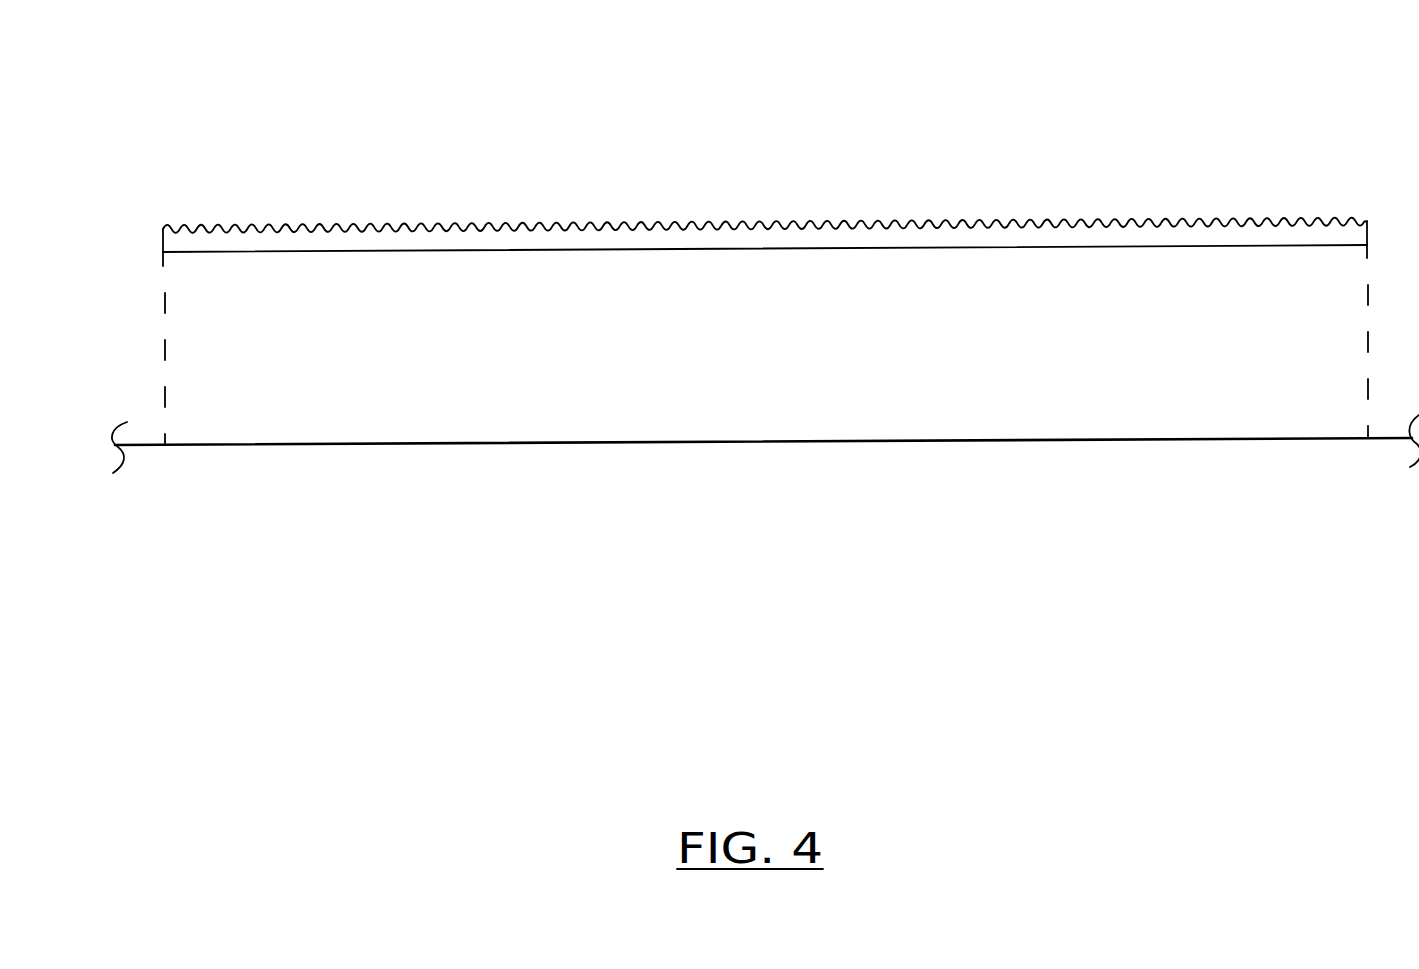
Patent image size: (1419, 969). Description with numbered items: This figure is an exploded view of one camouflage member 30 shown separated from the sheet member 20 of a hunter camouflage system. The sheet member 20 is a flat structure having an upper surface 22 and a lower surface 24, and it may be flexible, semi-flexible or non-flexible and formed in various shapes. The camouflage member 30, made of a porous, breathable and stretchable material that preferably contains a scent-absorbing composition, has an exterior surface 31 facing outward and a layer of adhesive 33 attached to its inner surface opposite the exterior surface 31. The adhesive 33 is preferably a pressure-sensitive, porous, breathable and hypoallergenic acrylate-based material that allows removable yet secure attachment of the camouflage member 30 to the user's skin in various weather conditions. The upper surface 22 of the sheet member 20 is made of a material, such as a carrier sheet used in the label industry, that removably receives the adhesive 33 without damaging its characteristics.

The sheet member 20 is at (765, 330).
The upper surface 22 is at (765, 475).
The lower surface 24 is at (680, 443).
The camouflage member 30 is at (765, 239).
The exterior surface 31 is at (707, 223).
The adhesive 33 is at (883, 248).